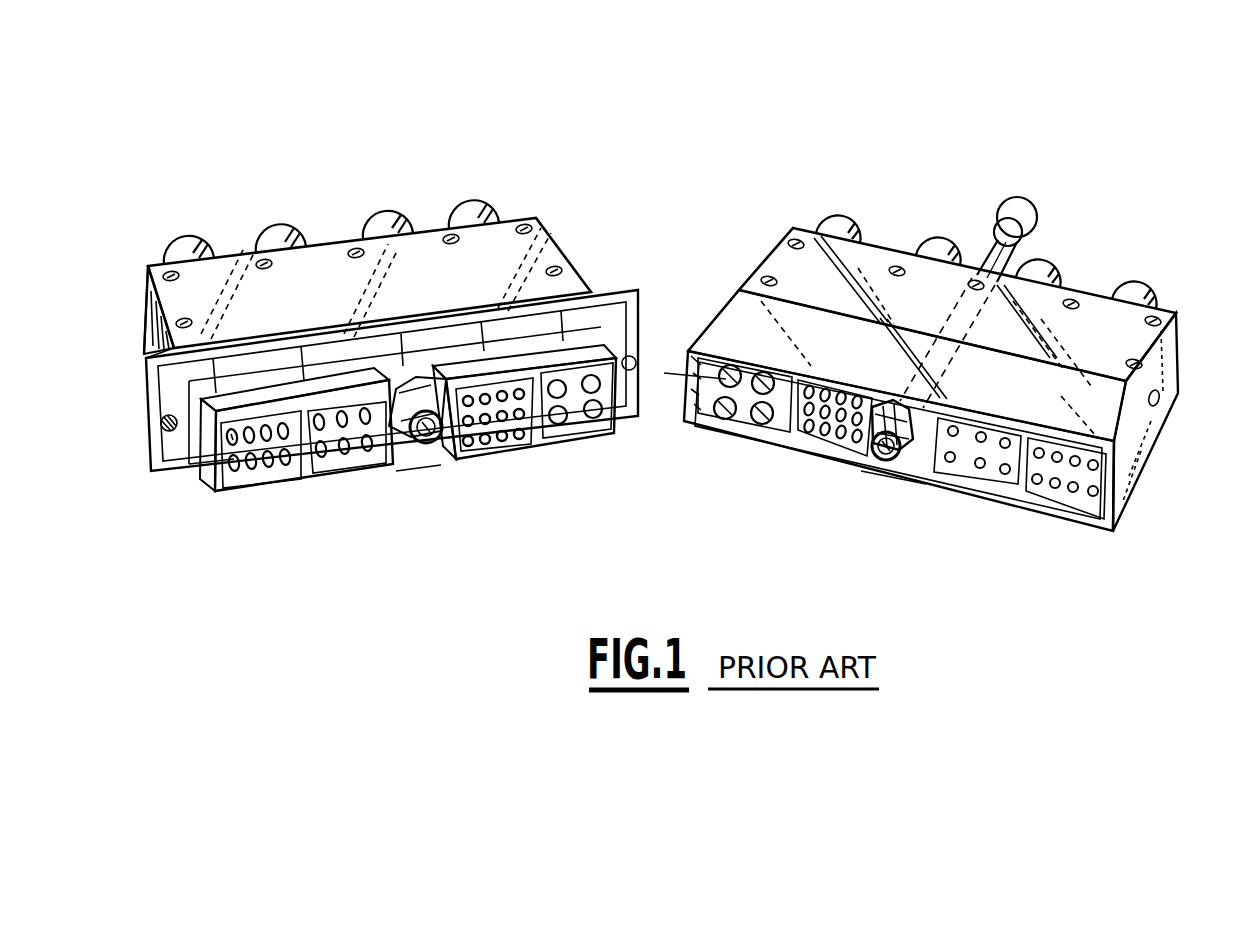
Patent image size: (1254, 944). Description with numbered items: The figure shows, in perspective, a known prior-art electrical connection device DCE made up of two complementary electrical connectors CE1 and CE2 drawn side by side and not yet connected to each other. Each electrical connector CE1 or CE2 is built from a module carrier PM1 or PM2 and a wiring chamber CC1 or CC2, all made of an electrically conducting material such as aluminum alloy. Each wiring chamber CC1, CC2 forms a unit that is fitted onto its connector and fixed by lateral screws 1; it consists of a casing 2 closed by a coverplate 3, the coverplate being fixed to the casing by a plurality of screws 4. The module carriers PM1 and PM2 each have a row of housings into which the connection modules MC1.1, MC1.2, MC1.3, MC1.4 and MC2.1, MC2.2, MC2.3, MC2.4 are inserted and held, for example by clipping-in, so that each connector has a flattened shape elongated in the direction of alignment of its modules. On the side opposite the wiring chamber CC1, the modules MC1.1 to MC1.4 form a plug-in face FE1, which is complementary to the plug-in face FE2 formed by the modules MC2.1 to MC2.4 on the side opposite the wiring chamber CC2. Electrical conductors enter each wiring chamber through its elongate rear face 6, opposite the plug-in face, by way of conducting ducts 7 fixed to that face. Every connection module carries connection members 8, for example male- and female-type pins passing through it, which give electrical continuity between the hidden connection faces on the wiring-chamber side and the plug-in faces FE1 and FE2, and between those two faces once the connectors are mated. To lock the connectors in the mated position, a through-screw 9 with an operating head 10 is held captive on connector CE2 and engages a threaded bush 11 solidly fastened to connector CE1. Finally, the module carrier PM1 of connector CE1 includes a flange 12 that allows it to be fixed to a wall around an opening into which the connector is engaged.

The electrical connection device DCE is at (675, 178).
The electrical connector CE1 is at (132, 378).
The electrical connector CE2 is at (1193, 300).
The lateral screws 1 is at (1160, 398).
The casing 2 is at (148, 295).
The coverplate 3 is at (548, 240).
The screws 4 is at (360, 252).
The elongate rear face 6 is at (237, 245).
The conducting ducts 7 is at (282, 235).
The connection members 8 is at (243, 480).
The through-screw 9 is at (881, 462).
The operating head 10 is at (1014, 206).
The threaded bush 11 is at (433, 442).
The flange 12 is at (165, 455).
The wiring chamber CC1 is at (328, 270).
The wiring chamber CC2 is at (875, 262).
The module carrier PM1 is at (573, 288).
The module carrier PM2 is at (1098, 433).
The plug-in face FE1 is at (415, 485).
The plug-in face FE2 is at (902, 492).
The connection module MC1.1 is at (277, 467).
The connection module MC1.2 is at (363, 452).
The connection module MC1.3 is at (510, 423).
The connection module MC1.4 is at (582, 418).
The connection module MC2.1 is at (1060, 492).
The connection module MC2.2 is at (987, 467).
The connection module MC2.3 is at (830, 440).
The connection module MC2.4 is at (743, 410).